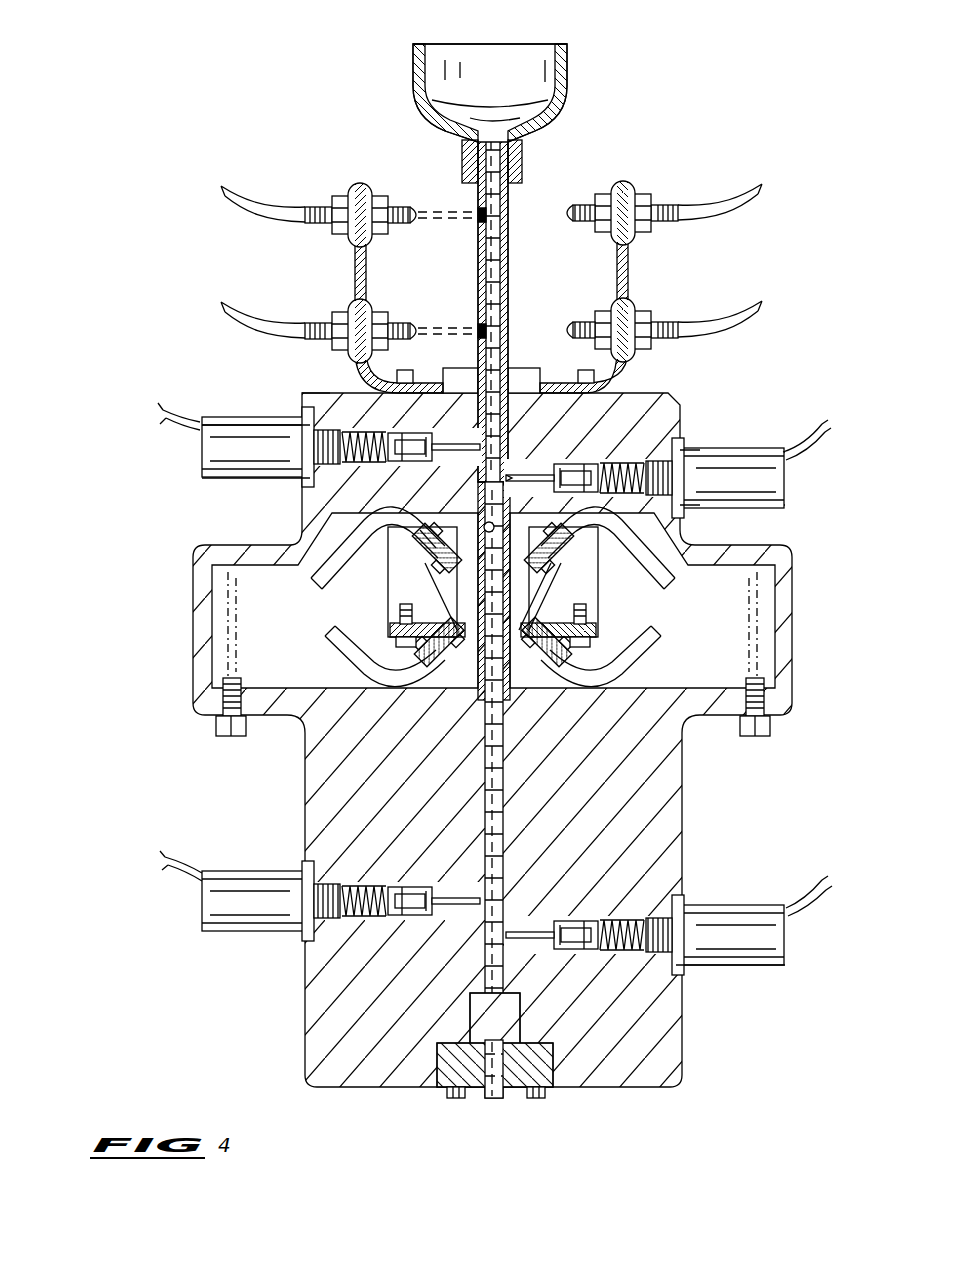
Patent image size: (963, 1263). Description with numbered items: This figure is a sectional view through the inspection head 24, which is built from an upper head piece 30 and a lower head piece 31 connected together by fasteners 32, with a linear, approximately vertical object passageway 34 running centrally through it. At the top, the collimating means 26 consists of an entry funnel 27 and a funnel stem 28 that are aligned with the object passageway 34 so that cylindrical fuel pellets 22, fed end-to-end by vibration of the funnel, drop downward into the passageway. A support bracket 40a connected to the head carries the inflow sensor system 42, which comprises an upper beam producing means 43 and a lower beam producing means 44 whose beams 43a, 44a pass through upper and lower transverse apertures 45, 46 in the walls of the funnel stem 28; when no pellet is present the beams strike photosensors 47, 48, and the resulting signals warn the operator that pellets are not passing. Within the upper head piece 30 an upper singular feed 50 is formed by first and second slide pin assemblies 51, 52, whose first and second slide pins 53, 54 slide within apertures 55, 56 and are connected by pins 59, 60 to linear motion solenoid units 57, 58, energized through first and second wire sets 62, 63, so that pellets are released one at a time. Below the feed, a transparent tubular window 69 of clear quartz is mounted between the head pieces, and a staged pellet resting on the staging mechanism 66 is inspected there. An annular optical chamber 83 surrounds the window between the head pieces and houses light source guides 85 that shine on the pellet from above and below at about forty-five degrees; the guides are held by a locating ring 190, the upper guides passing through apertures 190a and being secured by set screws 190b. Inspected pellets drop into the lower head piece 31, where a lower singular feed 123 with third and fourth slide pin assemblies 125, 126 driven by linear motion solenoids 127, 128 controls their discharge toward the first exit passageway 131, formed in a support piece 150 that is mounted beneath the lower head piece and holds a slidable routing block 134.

The cylindrical fuel pellets 22 is at (509, 262).
The inspection head 24 is at (186, 632).
The collimating means 26 is at (574, 100).
The entry funnel 27 is at (575, 60).
The funnel stem 28 is at (509, 314).
The upper head piece 30 is at (712, 389).
The lower head piece 31 is at (322, 776).
The fasteners 32 is at (231, 740).
The object passageway 34 is at (486, 524).
The support bracket 40a is at (630, 274).
The inflow sensor system 42 is at (240, 172).
The upper beam producing means 43 is at (346, 184).
The upper beam 43a is at (433, 205).
The lower beam producing means 44 is at (340, 316).
The lower beam 44a is at (432, 324).
The upper transverse aperture 45 is at (478, 224).
The lower transverse aperture 46 is at (478, 342).
The photosensor 47 is at (645, 186).
The photosensor 48 is at (656, 318).
The upper singular feed 50 is at (213, 480).
The first slide pin assembly 51 is at (302, 402).
The second slide pin assembly 52 is at (688, 444).
The first slide pin 53 is at (458, 440).
The second slide pin 54 is at (525, 474).
The aperture 55 is at (440, 462).
The aperture 56 is at (530, 528).
The linear motion solenoid unit 57 is at (205, 448).
The linear motion solenoid unit 58 is at (780, 492).
The pin 59 is at (406, 432).
The pin 60 is at (576, 464).
The first wire set 62 is at (170, 412).
The second wire set 63 is at (822, 426).
The staging mechanism 66 is at (446, 636).
The tubular window 69 is at (530, 594).
The optical chamber 83 is at (493, 600).
The light source guides 85 is at (318, 581).
The lower singular feed 123 is at (718, 900).
The third slide pin assembly 125 is at (424, 886).
The fourth slide pin assembly 126 is at (520, 928).
The linear motion solenoid 127 is at (256, 876).
The linear motion solenoid 128 is at (732, 968).
The first exit passageway 131 is at (502, 1088).
The routing block 134 is at (468, 1018).
The support piece 150 is at (455, 1072).
The locating ring 190 is at (392, 600).
The apertures 190a is at (428, 520).
The set screws 190b is at (430, 560).